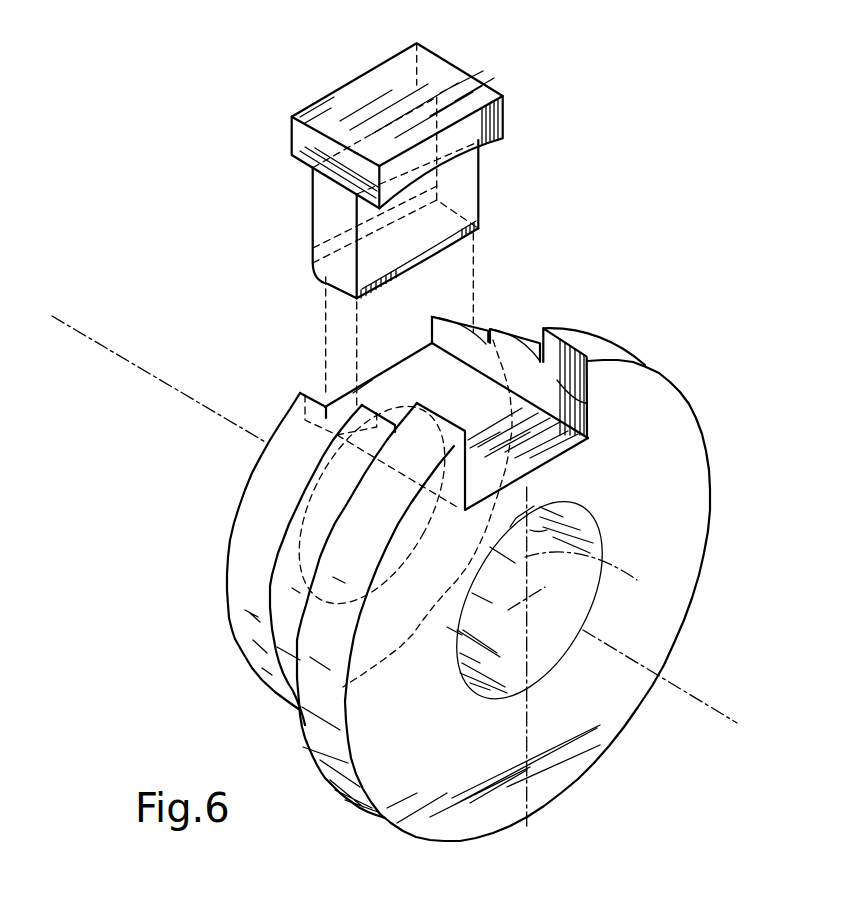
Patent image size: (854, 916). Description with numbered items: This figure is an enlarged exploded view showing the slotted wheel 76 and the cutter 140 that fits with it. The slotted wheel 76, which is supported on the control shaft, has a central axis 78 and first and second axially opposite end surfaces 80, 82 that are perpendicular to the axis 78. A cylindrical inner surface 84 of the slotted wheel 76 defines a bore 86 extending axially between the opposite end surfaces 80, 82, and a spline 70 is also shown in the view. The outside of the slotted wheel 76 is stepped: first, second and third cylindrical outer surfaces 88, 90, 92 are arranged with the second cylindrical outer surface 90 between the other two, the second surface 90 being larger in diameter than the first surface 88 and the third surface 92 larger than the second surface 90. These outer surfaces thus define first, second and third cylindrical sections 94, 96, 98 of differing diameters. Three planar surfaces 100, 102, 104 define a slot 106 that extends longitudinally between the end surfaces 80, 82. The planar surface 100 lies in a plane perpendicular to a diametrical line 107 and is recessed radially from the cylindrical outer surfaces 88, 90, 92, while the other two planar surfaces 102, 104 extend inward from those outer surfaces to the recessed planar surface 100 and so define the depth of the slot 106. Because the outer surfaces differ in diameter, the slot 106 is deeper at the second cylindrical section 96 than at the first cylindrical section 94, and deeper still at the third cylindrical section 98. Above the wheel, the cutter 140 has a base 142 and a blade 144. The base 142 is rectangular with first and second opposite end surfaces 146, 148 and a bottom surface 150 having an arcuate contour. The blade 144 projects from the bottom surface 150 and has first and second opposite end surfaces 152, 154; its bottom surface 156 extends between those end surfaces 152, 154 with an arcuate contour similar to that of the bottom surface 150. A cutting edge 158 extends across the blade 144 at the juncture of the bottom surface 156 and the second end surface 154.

The spline 70 is at (558, 530).
The slotted wheel 76 is at (181, 564).
The central axis 78 is at (706, 696).
The first end surface 80 is at (272, 513).
The second end surface 82 is at (420, 783).
The cylindrical inner surface 84 is at (507, 678).
The bore 86 is at (560, 650).
The first cylindrical outer surface 88 is at (247, 627).
The second cylindrical outer surface 90 is at (277, 687).
The third cylindrical outer surface 92 is at (323, 733).
The first cylindrical section 94 is at (485, 308).
The second cylindrical section 96 is at (534, 309).
The third cylindrical section 98 is at (621, 324).
The planar surface 100 is at (540, 445).
The planar surface 102 is at (667, 377).
The planar surface 104 is at (320, 410).
The slot 106 is at (370, 358).
The diametrical line 107 is at (604, 567).
The cutter 140 is at (266, 87).
The base 142 is at (357, 78).
The blade 144 is at (311, 206).
The first end surface 146 is at (298, 140).
The second end surface 148 is at (465, 98).
The bottom surface 150 is at (490, 143).
The first end surface 152 is at (330, 230).
The second end surface 154 is at (460, 183).
The bottom surface 156 is at (403, 243).
The cutting edge 158 is at (453, 217).